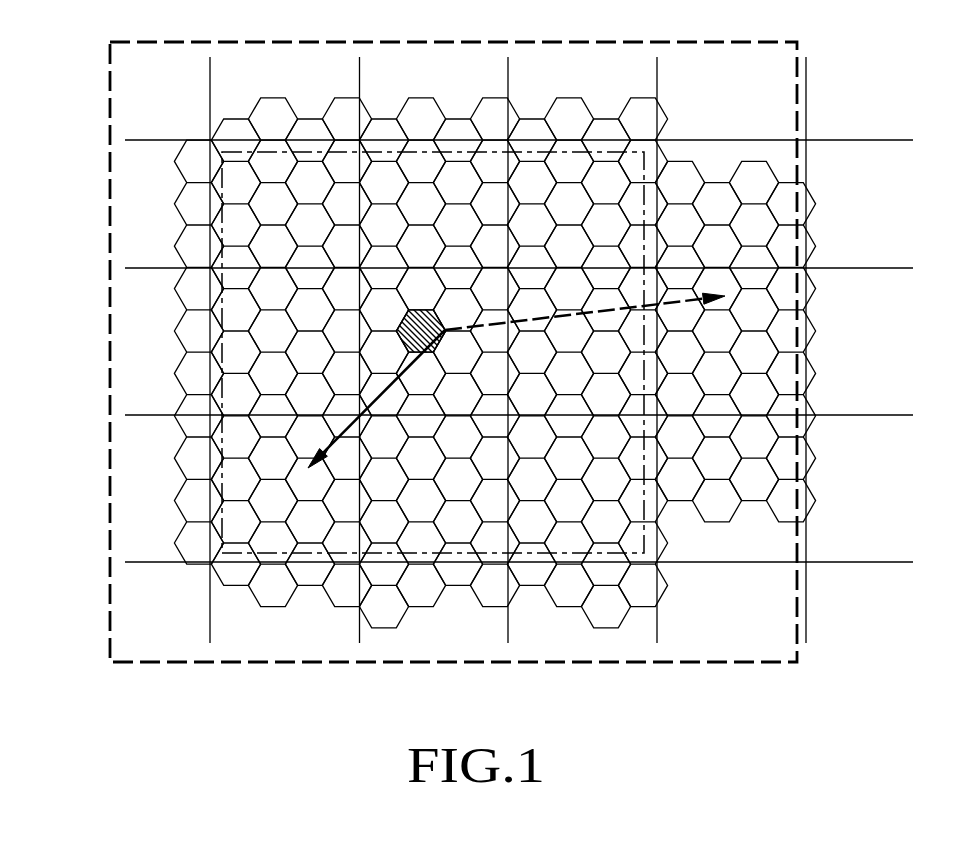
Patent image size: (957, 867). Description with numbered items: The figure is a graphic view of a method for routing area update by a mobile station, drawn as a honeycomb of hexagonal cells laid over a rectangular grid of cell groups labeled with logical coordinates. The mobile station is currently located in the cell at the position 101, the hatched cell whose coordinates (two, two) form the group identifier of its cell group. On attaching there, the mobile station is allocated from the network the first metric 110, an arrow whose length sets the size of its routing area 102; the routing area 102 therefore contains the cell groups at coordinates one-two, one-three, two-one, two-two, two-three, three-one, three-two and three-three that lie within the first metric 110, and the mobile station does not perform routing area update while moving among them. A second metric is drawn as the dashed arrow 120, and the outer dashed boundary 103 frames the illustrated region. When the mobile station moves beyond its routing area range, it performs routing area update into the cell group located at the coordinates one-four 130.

The position 101 is at (432, 309).
The routing area 102 is at (220, 307).
The search region boundary 103 is at (457, 42).
The metric (R1) 110 is at (312, 466).
The second search range R2 120 is at (703, 303).
The cell group located at the coordinates [1, 4] 130 is at (755, 205).